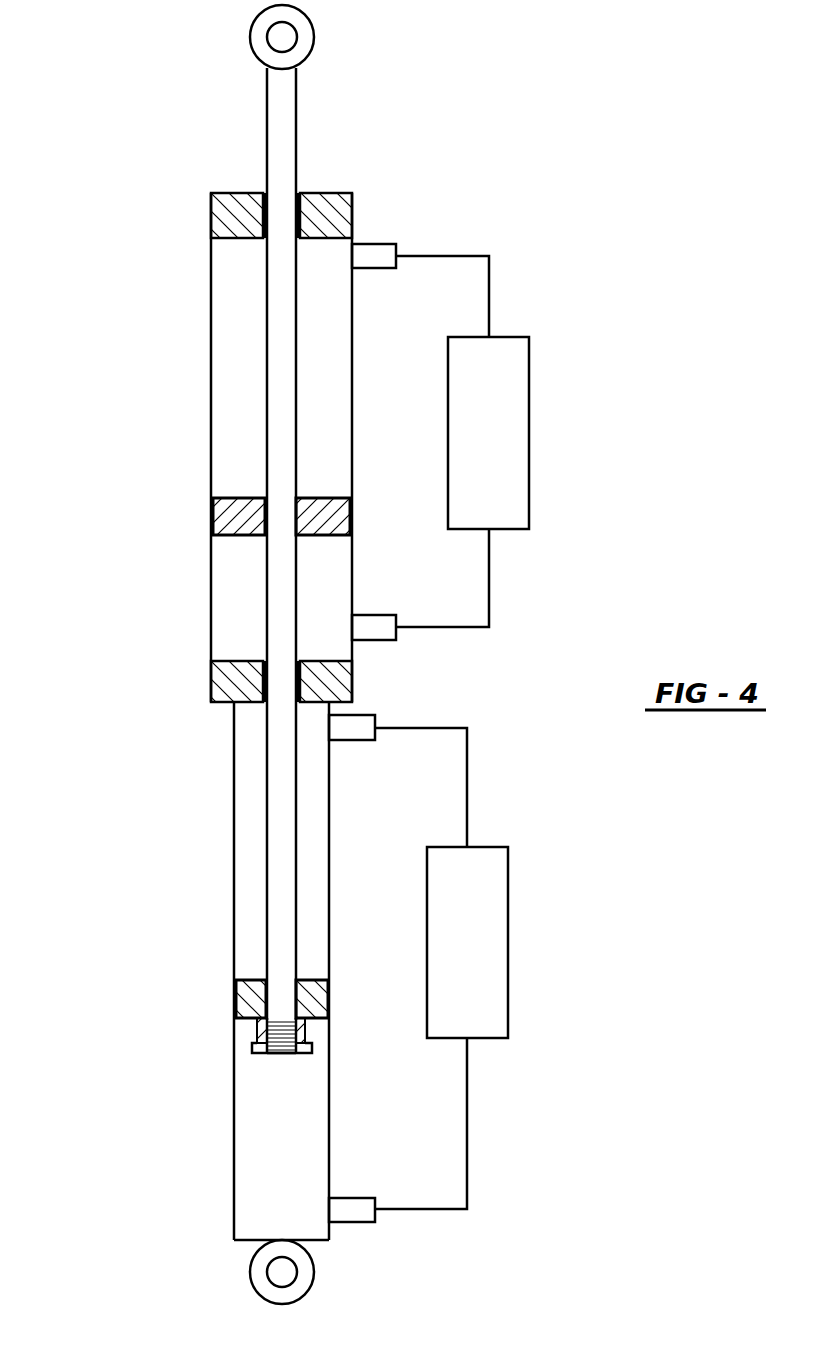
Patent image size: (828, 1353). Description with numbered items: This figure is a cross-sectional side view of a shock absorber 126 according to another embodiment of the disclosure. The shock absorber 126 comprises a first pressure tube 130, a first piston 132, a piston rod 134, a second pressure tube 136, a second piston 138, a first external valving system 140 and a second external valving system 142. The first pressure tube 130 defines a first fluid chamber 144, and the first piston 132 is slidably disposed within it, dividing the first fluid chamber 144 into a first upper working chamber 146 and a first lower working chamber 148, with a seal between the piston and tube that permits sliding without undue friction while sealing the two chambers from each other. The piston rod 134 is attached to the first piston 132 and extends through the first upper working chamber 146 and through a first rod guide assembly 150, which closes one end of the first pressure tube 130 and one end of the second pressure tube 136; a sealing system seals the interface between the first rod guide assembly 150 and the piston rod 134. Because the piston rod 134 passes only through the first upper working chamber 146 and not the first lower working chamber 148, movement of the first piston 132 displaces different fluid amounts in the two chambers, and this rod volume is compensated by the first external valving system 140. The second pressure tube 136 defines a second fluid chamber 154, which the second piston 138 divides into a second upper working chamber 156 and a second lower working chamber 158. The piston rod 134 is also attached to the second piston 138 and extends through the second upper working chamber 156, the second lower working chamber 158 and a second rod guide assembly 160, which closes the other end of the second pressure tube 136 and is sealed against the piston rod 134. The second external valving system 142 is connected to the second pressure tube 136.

The shock absorber 126 is at (158, 110).
The first pressure tube 130 is at (234, 1070).
The first piston 132 is at (234, 998).
The piston rod 134 is at (284, 146).
The second pressure tube 136 is at (210, 311).
The second piston 138 is at (232, 513).
The first external valving system 140 is at (482, 943).
The second external valving system 142 is at (502, 406).
The first fluid chamber 144 is at (251, 773).
The first upper working chamber 146 is at (250, 857).
The first lower working chamber 148 is at (268, 1183).
The first rod guide assembly 150 is at (333, 678).
The second fluid chamber 154 is at (240, 398).
The second upper working chamber 156 is at (237, 457).
The second lower working chamber 158 is at (228, 618).
The second rod guide assembly 160 is at (340, 217).